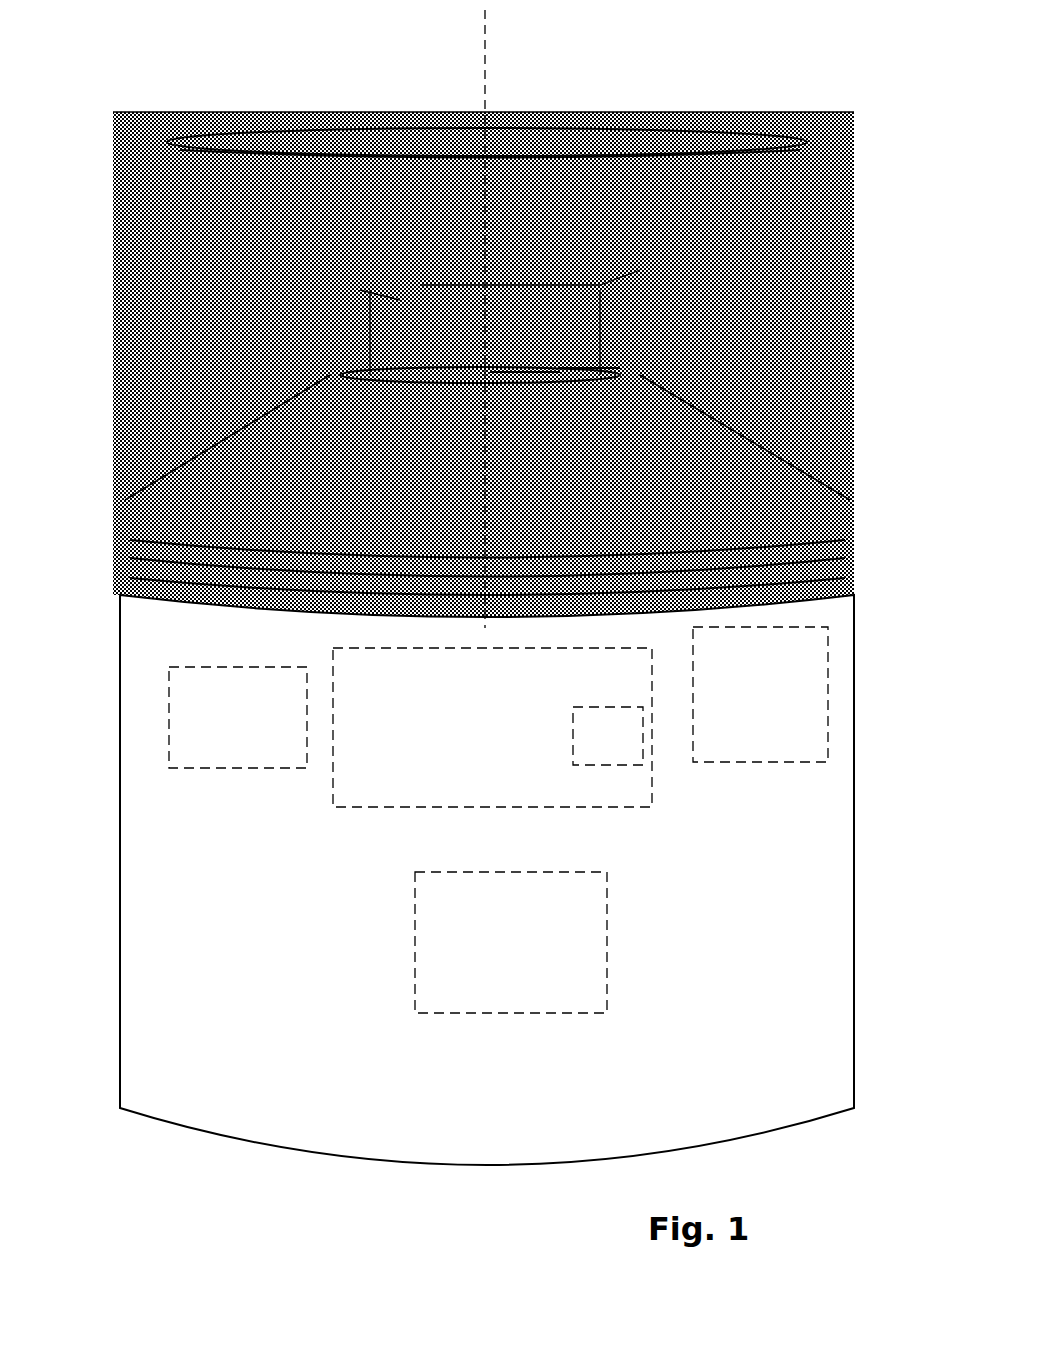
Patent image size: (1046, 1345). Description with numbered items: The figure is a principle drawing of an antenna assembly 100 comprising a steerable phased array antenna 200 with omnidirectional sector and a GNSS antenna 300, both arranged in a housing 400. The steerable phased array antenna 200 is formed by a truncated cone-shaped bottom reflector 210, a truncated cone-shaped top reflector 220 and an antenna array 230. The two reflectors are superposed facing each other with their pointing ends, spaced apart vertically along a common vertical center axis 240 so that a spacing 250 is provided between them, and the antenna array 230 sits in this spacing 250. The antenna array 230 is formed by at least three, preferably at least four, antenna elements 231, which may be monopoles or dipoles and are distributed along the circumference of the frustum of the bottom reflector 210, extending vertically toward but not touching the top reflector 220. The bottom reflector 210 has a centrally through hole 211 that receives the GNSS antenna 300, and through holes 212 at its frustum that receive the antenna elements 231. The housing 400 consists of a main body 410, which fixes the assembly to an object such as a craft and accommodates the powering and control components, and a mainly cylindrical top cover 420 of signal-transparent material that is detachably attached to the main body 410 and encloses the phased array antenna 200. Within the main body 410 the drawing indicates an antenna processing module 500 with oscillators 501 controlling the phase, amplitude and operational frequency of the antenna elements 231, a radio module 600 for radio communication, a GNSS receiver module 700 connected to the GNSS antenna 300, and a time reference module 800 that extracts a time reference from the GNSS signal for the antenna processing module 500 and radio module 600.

The antenna assembly 100 is at (502, 586).
The steerable phased array antenna 200 is at (495, 317).
The truncated cone-shaped bottom reflector 210 is at (712, 438).
The centrally through hole 211 is at (538, 370).
The through holes 212 is at (613, 365).
The truncated cone-shaped top reflector 220 is at (680, 137).
The antenna array 230 is at (621, 313).
The antenna elements 231 is at (367, 325).
The common vertical center axis 240 is at (486, 68).
The spacing 250 is at (364, 289).
The GNSS antenna 300 is at (454, 371).
The housing 400 is at (541, 819).
The main body 410 is at (854, 628).
The top cover 420 is at (290, 118).
The antenna processing module 500 is at (469, 772).
The oscillators 501 is at (585, 747).
The radio module 600 is at (215, 746).
The GNSS receiver module 700 is at (737, 739).
The time reference module 800 is at (487, 987).